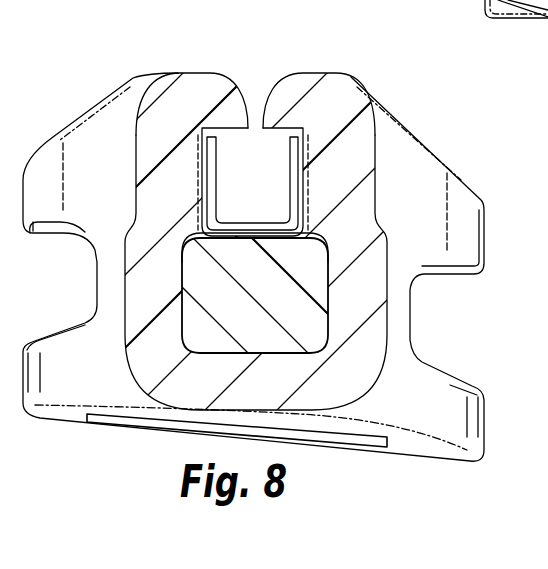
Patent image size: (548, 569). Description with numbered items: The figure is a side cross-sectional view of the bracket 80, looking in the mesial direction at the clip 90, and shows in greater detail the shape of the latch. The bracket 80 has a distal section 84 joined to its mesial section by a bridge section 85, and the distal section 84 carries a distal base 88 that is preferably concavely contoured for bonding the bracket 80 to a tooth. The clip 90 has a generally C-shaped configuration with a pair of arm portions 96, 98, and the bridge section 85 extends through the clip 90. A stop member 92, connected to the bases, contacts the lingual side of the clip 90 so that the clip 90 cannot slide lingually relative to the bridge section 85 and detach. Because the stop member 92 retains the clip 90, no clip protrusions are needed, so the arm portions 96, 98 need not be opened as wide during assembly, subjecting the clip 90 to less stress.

The bracket 80 is at (117, 46).
The distal section 84 is at (520, 20).
The bridge section 85 is at (308, 278).
The distal base 88 is at (447, 6).
The clip 90 is at (378, 184).
The stop member 92 is at (137, 417).
The arm portion 96 is at (208, 88).
The arm portion 98 is at (327, 97).